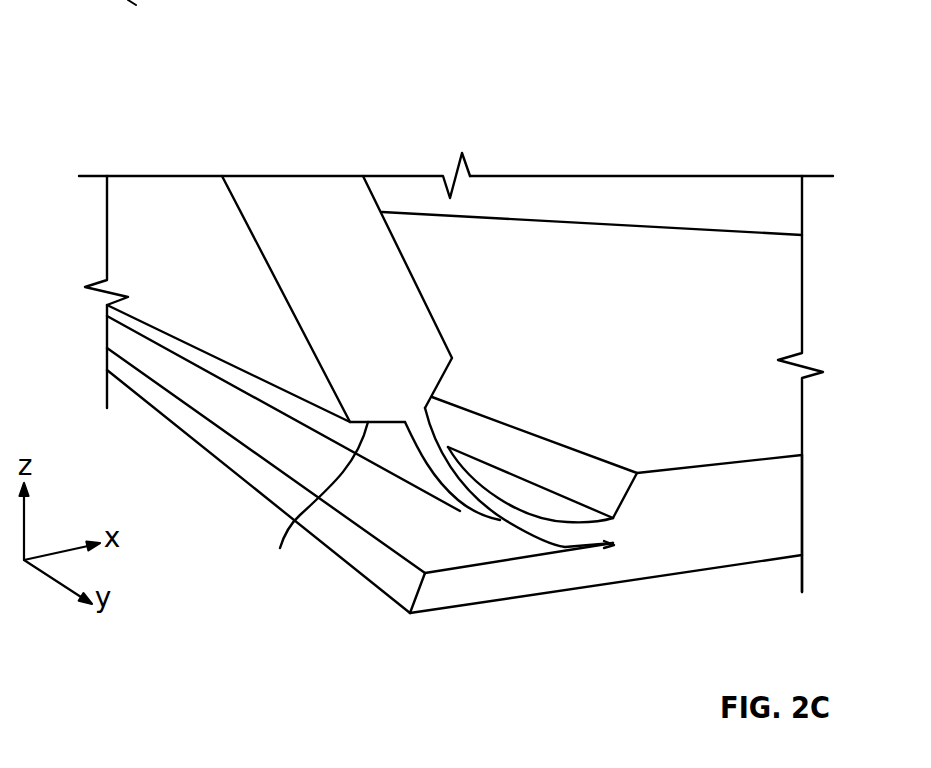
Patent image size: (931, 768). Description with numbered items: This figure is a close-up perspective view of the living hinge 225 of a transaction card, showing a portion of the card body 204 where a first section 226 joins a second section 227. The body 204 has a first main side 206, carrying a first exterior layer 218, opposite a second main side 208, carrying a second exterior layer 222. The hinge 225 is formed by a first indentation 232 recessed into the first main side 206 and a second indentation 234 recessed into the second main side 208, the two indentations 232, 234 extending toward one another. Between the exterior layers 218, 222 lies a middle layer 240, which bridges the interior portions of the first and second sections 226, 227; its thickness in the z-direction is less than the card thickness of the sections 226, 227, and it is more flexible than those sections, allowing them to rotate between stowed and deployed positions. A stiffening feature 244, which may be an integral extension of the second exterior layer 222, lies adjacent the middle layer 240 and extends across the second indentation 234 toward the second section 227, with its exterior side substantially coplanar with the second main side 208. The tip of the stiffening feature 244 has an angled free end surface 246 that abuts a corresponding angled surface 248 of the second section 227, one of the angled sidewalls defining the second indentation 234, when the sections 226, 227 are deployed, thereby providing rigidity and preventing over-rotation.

The body 204 is at (631, 176).
The first main side 206 is at (505, 188).
The first exterior layer 218 is at (628, 308).
The second exterior layer 222 is at (683, 592).
The hinge 225 is at (480, 416).
The first section 226 is at (789, 335).
The second section 227 is at (323, 186).
The first indentation 232 is at (536, 443).
The second indentation 234 is at (416, 527).
The middle layer 240 is at (537, 530).
The stiffening feature 244 is at (486, 598).
The angled free end surface 246 is at (345, 532).
The angled surface 248 is at (292, 517).
The second main side 208 is at (745, 567).